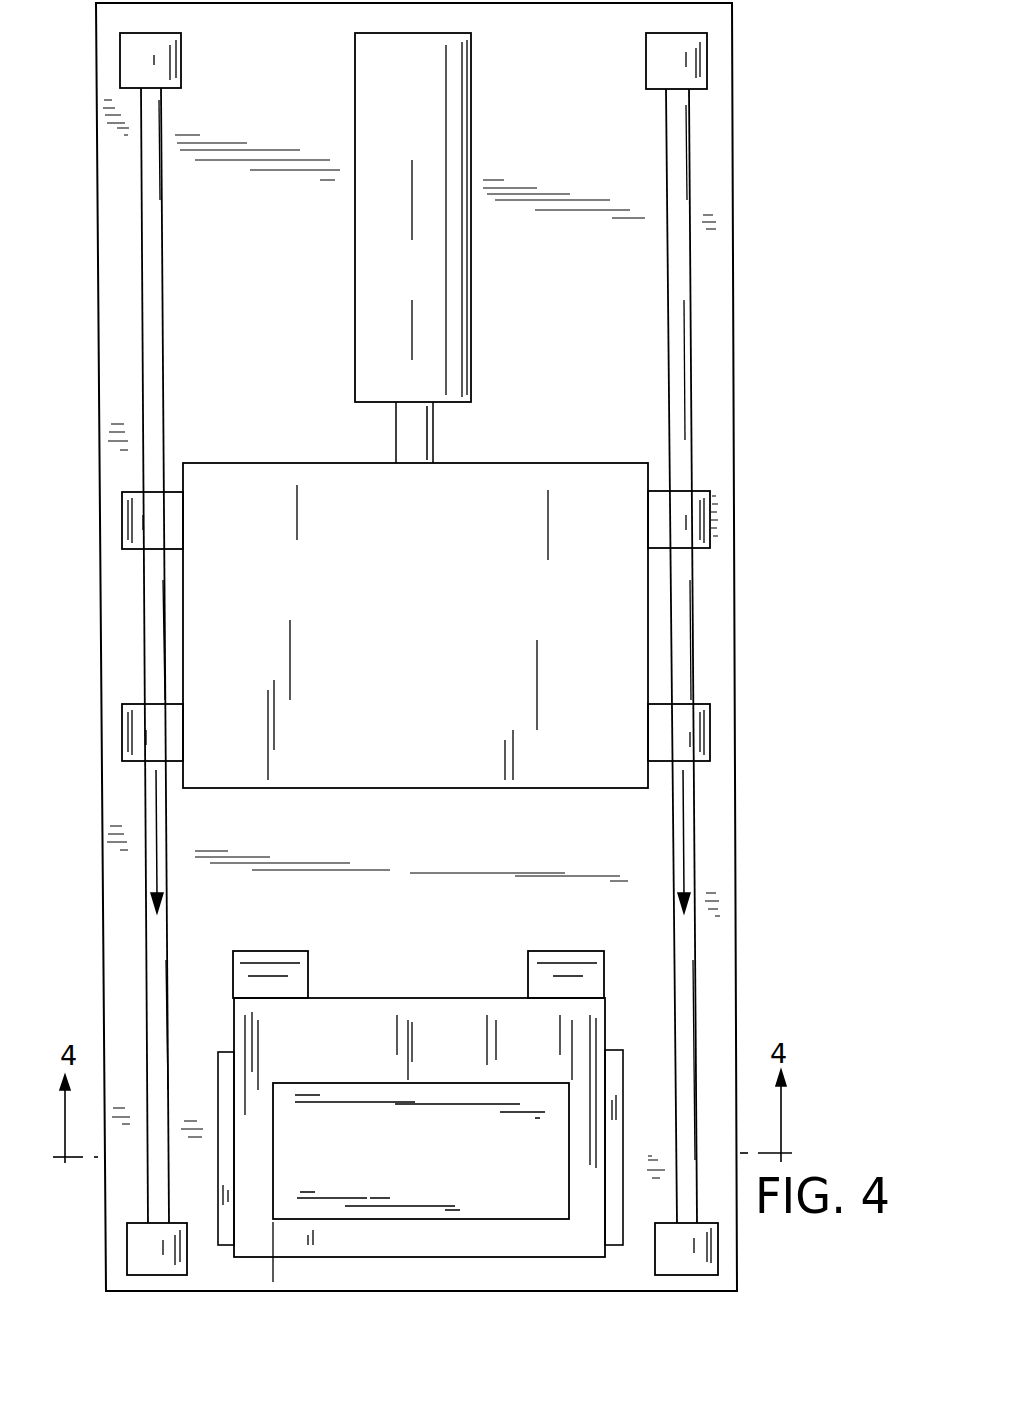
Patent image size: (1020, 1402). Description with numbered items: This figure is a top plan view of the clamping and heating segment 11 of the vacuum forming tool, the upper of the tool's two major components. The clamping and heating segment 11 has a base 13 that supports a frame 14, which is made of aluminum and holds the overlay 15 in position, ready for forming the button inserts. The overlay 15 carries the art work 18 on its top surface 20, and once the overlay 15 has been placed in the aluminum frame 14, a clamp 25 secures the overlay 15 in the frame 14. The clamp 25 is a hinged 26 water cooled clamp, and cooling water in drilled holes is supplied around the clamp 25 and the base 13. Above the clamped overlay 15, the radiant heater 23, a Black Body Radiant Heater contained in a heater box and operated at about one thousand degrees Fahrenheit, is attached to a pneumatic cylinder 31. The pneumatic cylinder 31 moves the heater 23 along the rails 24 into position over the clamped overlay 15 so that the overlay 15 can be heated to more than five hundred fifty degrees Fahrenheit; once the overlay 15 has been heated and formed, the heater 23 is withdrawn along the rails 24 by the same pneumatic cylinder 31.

The upper clamping and heating segment 11 is at (738, 946).
The base 13 is at (660, 1062).
The frame 14 is at (227, 1237).
The overlay 15 is at (517, 1212).
The art work 18 is at (352, 1150).
The top surface 20 is at (317, 1210).
The radiant heater 23 is at (525, 478).
The rails 24 is at (150, 418).
The clamp 25 is at (272, 1030).
The hinge 26 is at (257, 967).
The pneumatic cylinder 31 is at (438, 96).